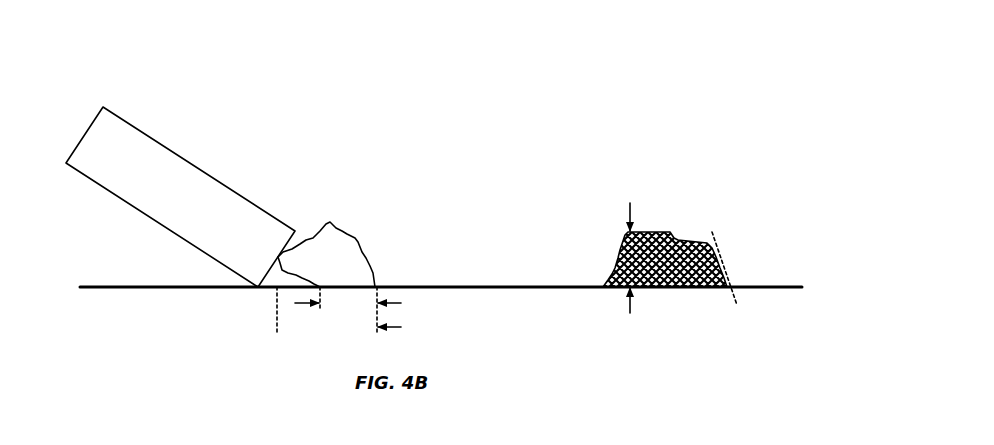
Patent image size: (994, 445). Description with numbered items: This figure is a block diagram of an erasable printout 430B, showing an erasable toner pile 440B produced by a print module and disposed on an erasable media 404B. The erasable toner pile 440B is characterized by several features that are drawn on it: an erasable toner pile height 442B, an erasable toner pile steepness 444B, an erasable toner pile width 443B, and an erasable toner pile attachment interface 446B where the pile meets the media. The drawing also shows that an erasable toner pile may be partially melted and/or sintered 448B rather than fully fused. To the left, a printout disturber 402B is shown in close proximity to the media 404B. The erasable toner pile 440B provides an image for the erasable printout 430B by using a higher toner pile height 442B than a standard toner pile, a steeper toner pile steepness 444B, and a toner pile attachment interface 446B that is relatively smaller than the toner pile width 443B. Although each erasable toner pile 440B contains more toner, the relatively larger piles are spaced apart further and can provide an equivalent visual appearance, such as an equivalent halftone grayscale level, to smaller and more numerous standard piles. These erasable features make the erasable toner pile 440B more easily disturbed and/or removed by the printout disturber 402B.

The erasable printout 430B is at (652, 77).
The printout disturber 402B is at (172, 153).
The erasable media 404B is at (165, 286).
The erasable toner pile 440B is at (335, 238).
The erasable toner pile width 443B is at (276, 327).
The erasable toner pile attachment interface 446B is at (398, 304).
The erasable toner pile height 442B is at (630, 205).
The partially melted and/or sintered erasable toner pile 448B is at (627, 260).
The erasable toner pile steepness 444B is at (721, 258).